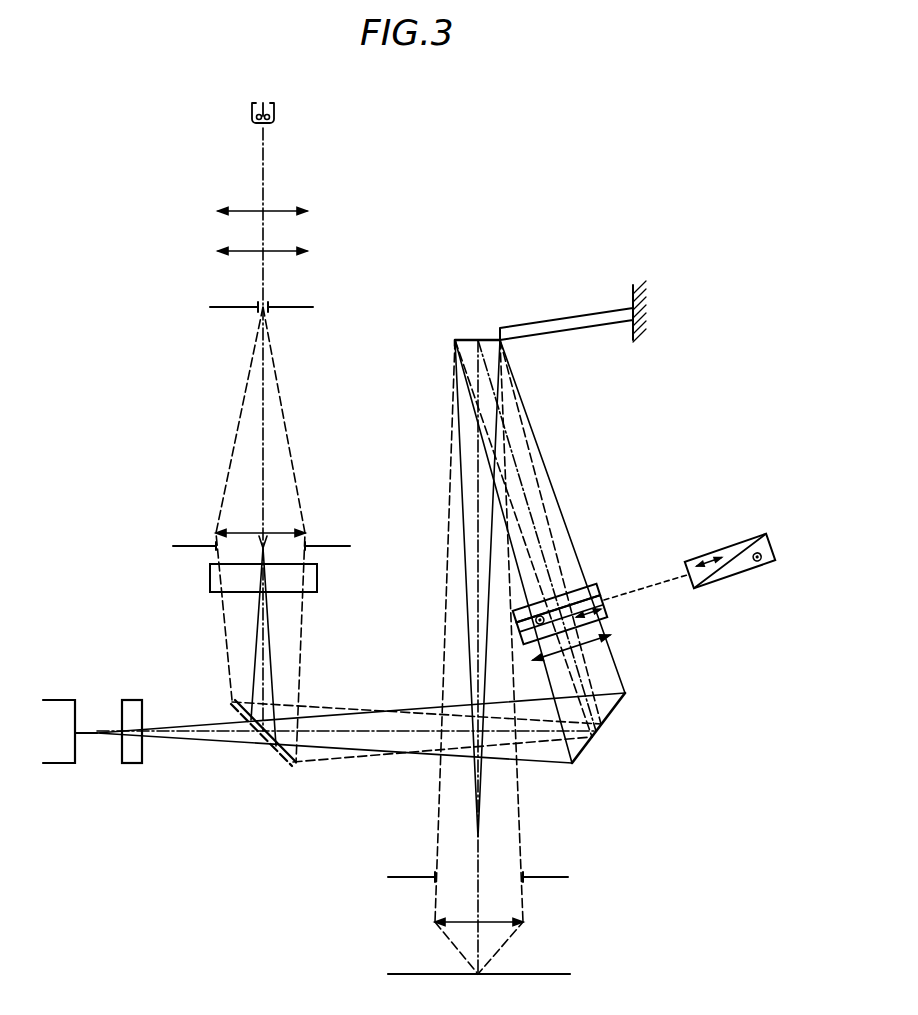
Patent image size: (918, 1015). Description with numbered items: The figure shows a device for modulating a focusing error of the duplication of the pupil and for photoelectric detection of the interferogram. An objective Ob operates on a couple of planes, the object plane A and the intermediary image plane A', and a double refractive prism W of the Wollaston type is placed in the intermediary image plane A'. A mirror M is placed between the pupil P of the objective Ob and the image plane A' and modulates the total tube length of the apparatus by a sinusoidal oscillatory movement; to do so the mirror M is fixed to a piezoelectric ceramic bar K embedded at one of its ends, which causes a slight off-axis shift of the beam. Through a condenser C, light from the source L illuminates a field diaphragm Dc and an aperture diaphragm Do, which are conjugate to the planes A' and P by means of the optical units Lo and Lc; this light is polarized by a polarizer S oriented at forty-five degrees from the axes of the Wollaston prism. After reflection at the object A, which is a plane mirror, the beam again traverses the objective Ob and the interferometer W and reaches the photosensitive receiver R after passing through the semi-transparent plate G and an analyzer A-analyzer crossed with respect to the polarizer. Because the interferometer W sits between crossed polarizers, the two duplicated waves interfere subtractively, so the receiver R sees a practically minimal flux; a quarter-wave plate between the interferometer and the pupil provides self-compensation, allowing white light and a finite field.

The light source L is at (236, 116).
The condenser C is at (248, 229).
The field diaphragm Dc is at (246, 311).
The optical unit Lo is at (239, 529).
The aperture diaphragm Do is at (246, 549).
The polarizer plate S is at (242, 580).
The photosensitive receiver R is at (68, 751).
The analyzer A-analyzer is at (129, 750).
The semi-transparent plate G is at (263, 751).
The mirror M is at (477, 328).
The piezoelectric ceramic bar K is at (573, 311).
The intermediary image plane A' is at (514, 627).
The optical unit Lc is at (584, 640).
The double refractive prism W is at (730, 570).
The pupil P is at (486, 880).
The objective Ob is at (512, 922).
The object plane A is at (492, 975).